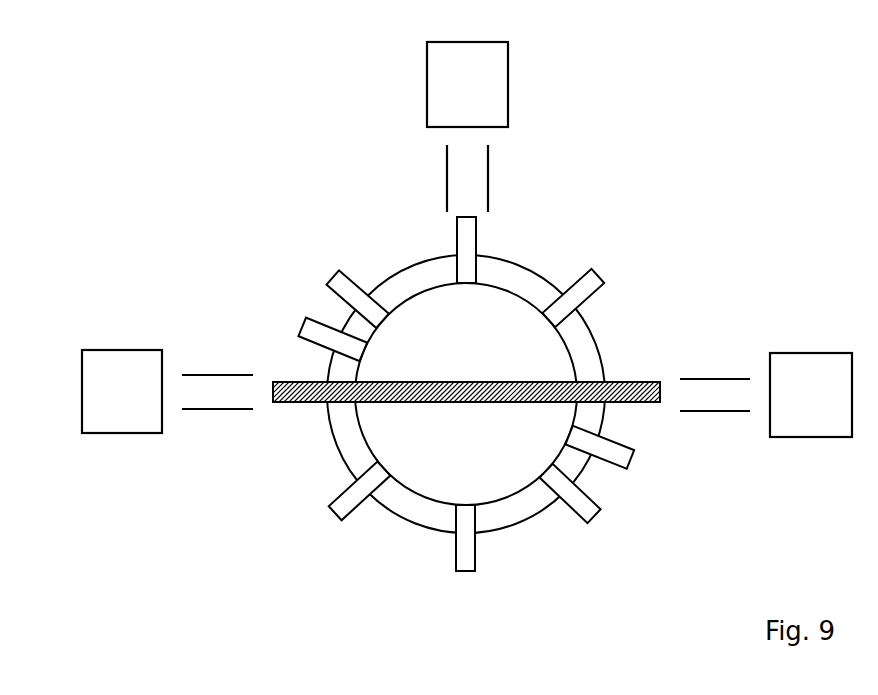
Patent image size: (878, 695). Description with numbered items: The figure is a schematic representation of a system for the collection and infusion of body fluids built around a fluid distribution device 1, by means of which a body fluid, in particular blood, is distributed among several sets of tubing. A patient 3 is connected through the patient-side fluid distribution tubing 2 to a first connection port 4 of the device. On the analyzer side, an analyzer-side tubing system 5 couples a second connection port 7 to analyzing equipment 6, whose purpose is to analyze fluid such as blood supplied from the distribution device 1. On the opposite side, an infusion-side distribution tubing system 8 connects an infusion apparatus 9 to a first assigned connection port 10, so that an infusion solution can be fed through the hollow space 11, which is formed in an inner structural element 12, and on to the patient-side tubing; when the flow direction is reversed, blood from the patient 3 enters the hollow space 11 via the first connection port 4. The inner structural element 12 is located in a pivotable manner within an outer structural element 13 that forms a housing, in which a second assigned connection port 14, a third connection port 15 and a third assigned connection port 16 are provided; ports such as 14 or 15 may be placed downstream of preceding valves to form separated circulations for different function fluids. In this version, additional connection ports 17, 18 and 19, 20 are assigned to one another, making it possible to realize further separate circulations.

The fluid distribution device 1 is at (195, 250).
The patient-side fluid distribution tubing 2 is at (218, 410).
The patient 3 is at (105, 372).
The first connection port 4 is at (290, 403).
The analyzer-side tubing system 5 is at (480, 195).
The analyzing equipment 6 is at (493, 98).
The second connection port 7 is at (478, 250).
The infusion-side distribution tubing system 8 is at (733, 378).
The infusion apparatus 9 is at (828, 365).
The first assigned connection port 10 is at (466, 388).
The hollow space 11 is at (385, 405).
The inner structural element 12 is at (533, 438).
The outer structural element 13 is at (520, 275).
The second assigned connection port 14 is at (456, 555).
The third connection port 15 is at (345, 285).
The third assigned connection port 16 is at (577, 523).
The additional connection port 17 is at (340, 522).
The additional connection port 18 is at (598, 285).
The additional connection port 19 is at (628, 468).
The additional connection port 20 is at (300, 322).